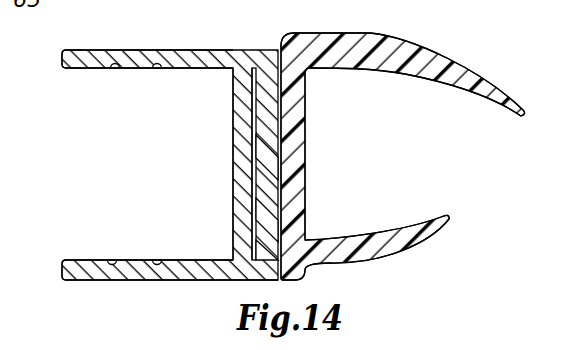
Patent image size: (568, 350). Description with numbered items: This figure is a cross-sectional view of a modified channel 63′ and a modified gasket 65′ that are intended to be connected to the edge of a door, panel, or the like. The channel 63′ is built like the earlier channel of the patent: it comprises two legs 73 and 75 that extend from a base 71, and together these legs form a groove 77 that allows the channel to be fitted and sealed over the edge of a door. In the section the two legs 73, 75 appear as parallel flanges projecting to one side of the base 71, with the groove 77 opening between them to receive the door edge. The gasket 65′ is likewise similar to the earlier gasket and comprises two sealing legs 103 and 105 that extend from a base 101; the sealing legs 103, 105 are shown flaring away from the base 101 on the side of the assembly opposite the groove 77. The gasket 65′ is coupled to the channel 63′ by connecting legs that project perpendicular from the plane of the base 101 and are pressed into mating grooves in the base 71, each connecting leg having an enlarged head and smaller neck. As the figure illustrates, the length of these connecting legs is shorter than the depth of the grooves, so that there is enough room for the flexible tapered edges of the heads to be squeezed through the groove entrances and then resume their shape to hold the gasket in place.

The groove 77 is at (72, 158).
The modified channel 63′ is at (204, 49).
The leg 73 is at (63, 68).
The base 71 is at (232, 164).
The leg 75 is at (154, 281).
The modified gasket 65′ is at (352, 33).
The base 101 is at (306, 162).
The sealing leg 103 is at (497, 88).
The sealing leg 105 is at (420, 243).